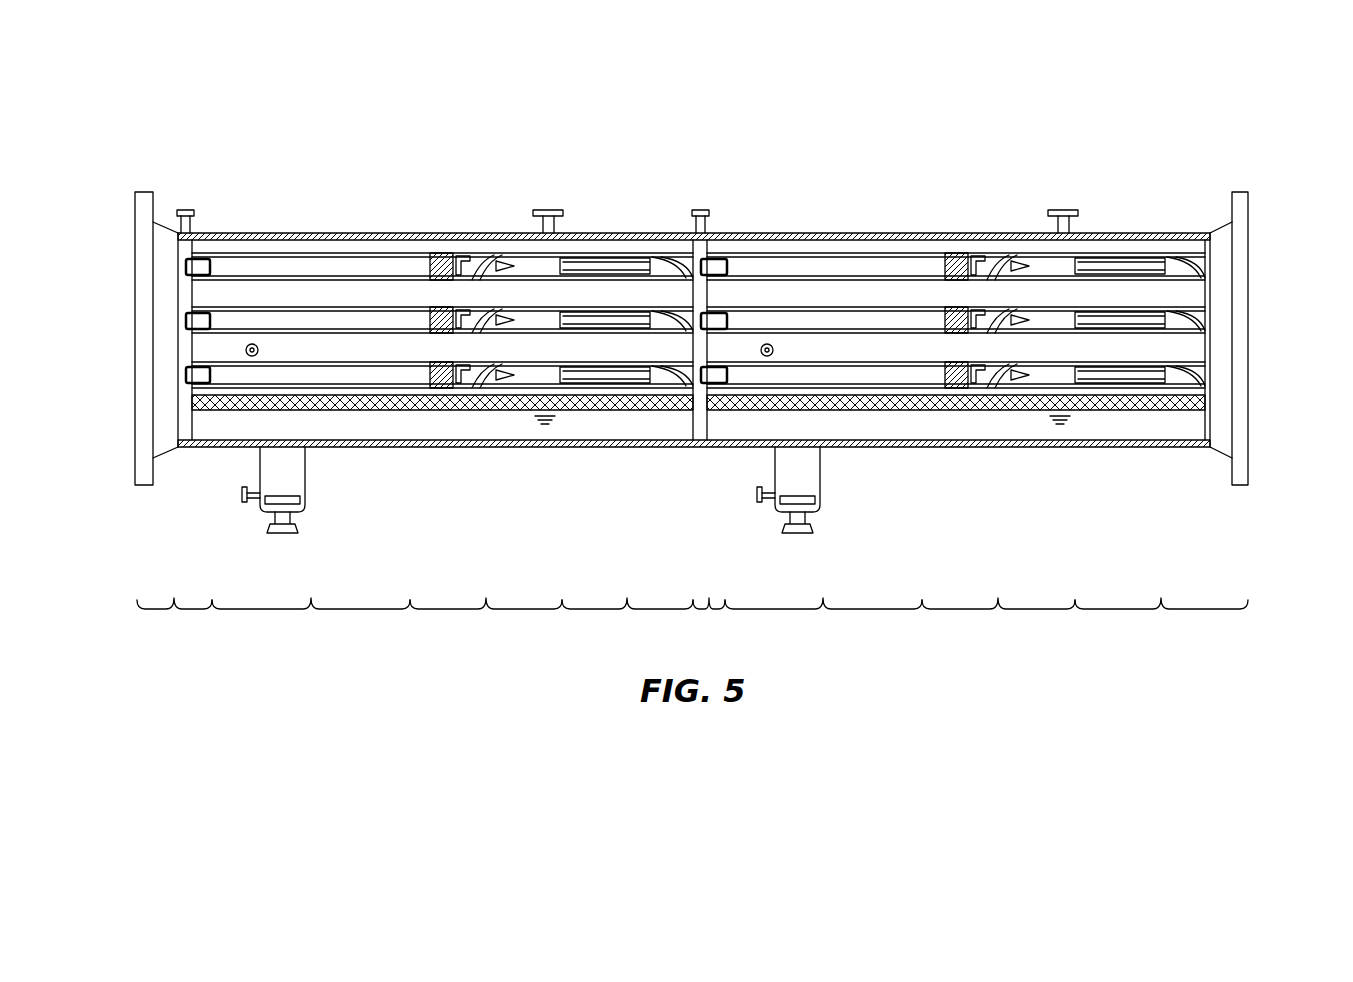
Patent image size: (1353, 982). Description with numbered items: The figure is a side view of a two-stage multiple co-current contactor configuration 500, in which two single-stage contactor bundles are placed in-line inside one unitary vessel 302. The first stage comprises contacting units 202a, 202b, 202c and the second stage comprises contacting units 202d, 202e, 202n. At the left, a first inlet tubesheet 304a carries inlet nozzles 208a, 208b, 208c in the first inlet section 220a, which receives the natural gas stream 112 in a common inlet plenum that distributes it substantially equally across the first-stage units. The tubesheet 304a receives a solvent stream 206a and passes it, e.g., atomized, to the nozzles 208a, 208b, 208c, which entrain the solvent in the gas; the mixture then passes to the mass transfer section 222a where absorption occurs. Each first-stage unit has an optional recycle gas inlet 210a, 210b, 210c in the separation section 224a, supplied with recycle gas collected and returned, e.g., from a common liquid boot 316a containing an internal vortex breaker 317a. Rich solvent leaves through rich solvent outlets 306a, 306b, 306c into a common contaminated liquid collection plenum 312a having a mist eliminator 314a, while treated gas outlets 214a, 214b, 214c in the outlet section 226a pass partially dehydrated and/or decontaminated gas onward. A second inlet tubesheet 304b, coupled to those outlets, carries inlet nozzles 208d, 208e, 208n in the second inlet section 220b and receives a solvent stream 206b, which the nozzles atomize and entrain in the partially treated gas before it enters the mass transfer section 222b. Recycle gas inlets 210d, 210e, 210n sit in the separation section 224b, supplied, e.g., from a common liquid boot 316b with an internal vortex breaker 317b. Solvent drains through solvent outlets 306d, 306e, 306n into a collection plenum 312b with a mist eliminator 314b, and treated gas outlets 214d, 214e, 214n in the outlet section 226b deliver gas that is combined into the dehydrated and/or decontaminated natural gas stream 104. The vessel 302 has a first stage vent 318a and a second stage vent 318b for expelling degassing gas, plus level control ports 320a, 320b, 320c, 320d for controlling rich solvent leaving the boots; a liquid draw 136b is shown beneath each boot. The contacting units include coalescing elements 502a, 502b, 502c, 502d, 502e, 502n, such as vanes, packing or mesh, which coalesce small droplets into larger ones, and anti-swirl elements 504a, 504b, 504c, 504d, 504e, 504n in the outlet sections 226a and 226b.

The two-stage multiple co-current contactor configuration 500 is at (150, 88).
The dehydrated and/or decontaminated natural gas stream 104 is at (1257, 340).
The natural gas stream 112 is at (118, 340).
The condensate outlet 136b is at (282, 538).
The contacting unit 202a is at (303, 250).
The contacting unit 202b is at (272, 307).
The contacting unit 202c is at (272, 362).
The contacting unit 202d is at (818, 250).
The contacting unit 202e is at (787, 307).
The contacting unit 202n is at (787, 362).
The solvent stream 206a is at (185, 204).
The solvent stream 206b is at (700, 204).
The inlet nozzle 208a is at (188, 262).
The inlet nozzle 208b is at (188, 318).
The inlet nozzle 208c is at (188, 375).
The inlet nozzle 208d is at (728, 267).
The inlet nozzle 208e is at (728, 321).
The inlet nozzle 208n is at (728, 375).
The recycle gas inlet 210a is at (460, 255).
The recycle gas inlet 210b is at (462, 308).
The recycle gas inlet 210c is at (462, 363).
The recycle gas inlet 210d is at (977, 255).
The recycle gas inlet 210e is at (977, 308).
The recycle gas inlet 210n is at (977, 363).
The treated gas outlet 214a is at (690, 263).
The treated gas outlet 214b is at (676, 365).
The treated gas outlet 214c is at (660, 395).
The treated gas outlet 214d is at (1210, 268).
The treated gas outlet 214e is at (1210, 328).
The treated gas outlet 214n is at (1210, 380).
The first inlet section 220a is at (174, 621).
The second inlet section 220b is at (710, 621).
The mass transfer section 222a is at (311, 621).
The mass transfer section 222b is at (823, 621).
The separation section 224a is at (486, 621).
The separation section 224b is at (998, 621).
The outlet section 226a is at (627, 621).
The outlet section 226b is at (1161, 621).
The vessel 302 is at (238, 233).
The first inlet tubesheet 304a is at (186, 292).
The second inlet tubesheet 304b is at (712, 245).
The rich solvent outlet 306a is at (618, 282).
The rich solvent outlet 306b is at (618, 335).
The rich solvent outlet 306c is at (620, 392).
The solvent outlet 306d is at (1145, 282).
The solvent outlet 306e is at (1145, 335).
The solvent outlet 306n is at (1140, 392).
The common contaminated liquid collection plenum 312a is at (518, 450).
The common contaminated liquid collection plenum 312b is at (1033, 450).
The mist eliminator 314a is at (438, 411).
The mist eliminator 314b is at (953, 411).
The common liquid boot 316a is at (306, 478).
The common liquid boot 316b is at (821, 478).
The internal vortex breaker 317a is at (300, 516).
The internal vortex breaker 317b is at (815, 516).
The first stage vent 318a is at (548, 210).
The second stage vent 318b is at (1063, 210).
The level control port 320a is at (242, 498).
The level control port 320b is at (248, 357).
The level control port 320c is at (757, 498).
The level control port 320d is at (763, 357).
The coalescing element 502a is at (433, 253).
The coalescing element 502b is at (428, 320).
The coalescing element 502c is at (428, 374).
The coalescing element 502d is at (960, 253).
The coalescing element 502e is at (958, 320).
The coalescing element 502n is at (958, 374).
The anti-swirl element 504a is at (672, 262).
The anti-swirl element 504b is at (676, 312).
The anti-swirl element 504c is at (688, 392).
The anti-swirl element 504d is at (1178, 262).
The anti-swirl element 504e is at (1210, 318).
The anti-swirl element 504n is at (1210, 388).